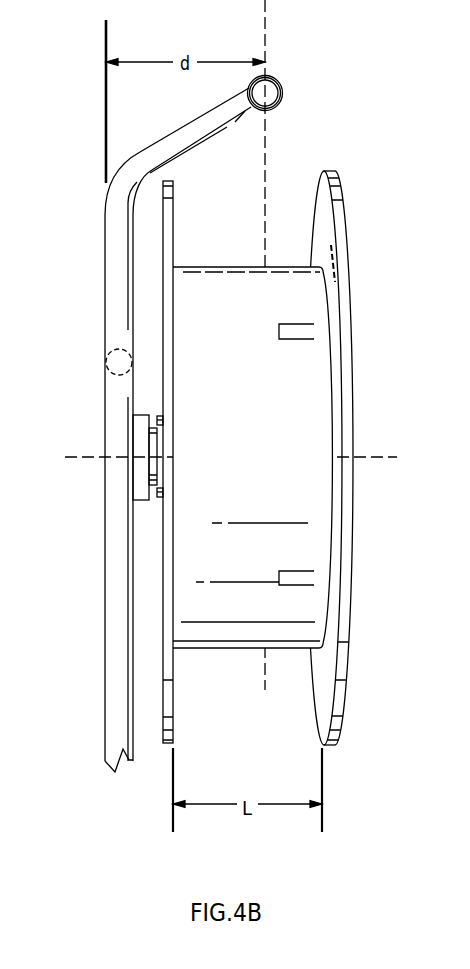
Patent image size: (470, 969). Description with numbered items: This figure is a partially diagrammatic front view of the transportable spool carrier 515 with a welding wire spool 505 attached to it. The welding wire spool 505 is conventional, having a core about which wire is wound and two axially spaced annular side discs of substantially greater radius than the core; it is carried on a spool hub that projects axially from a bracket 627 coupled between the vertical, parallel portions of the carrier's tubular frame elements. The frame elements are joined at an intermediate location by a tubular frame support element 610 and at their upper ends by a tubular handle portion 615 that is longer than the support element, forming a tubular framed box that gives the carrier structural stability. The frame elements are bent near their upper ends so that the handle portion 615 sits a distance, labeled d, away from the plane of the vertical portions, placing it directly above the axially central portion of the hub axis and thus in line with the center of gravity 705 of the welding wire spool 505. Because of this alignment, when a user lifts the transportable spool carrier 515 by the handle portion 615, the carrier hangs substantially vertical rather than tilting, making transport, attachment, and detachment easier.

The welding wire spool 505 is at (346, 222).
The transportable spool carrier 515 is at (249, 416).
The tubular frame support element 610 is at (118, 348).
The tubular handle portion 615 is at (276, 80).
The bracket 627 is at (146, 495).
The center of gravity 705 is at (265, 457).